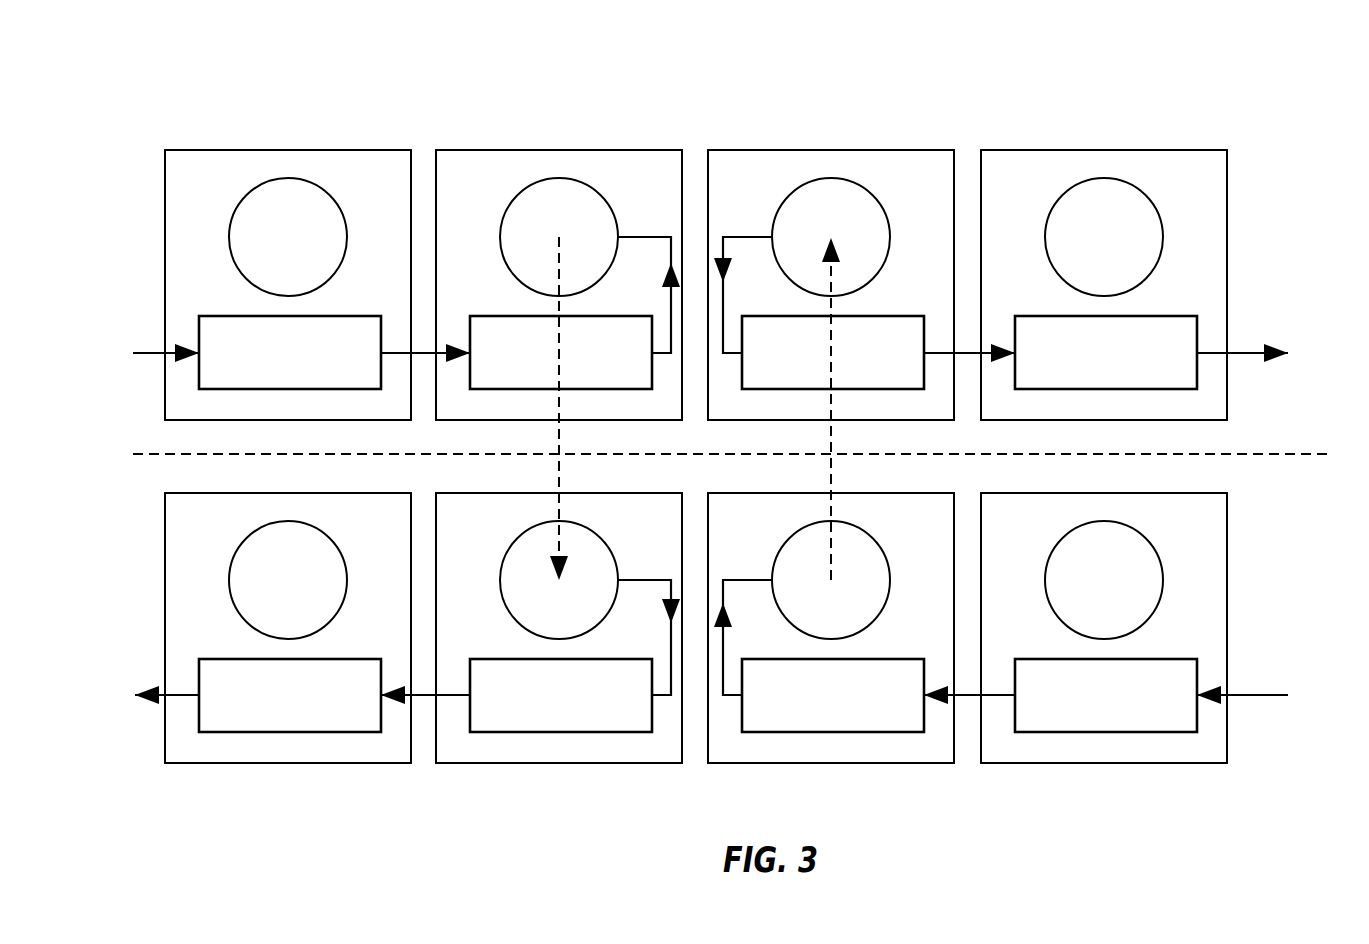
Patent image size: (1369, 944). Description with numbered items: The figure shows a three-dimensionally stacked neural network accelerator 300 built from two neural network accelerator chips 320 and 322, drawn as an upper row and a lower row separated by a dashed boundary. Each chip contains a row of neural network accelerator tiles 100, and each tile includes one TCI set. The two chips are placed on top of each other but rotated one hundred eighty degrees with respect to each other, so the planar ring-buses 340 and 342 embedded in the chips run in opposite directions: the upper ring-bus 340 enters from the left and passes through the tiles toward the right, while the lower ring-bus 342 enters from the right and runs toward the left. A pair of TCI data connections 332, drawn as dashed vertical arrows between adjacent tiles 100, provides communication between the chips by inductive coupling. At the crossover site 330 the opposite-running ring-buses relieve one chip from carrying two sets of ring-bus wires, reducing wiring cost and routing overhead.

The neural network accelerator tile 100 is at (746, 458).
The three-dimensionally stacked neural network accelerator 300 is at (243, 68).
The neural network accelerator chip 320 is at (746, 285).
The neural network accelerator chip 322 is at (747, 628).
The crossover site 330 is at (696, 668).
The TCI data connection 332 is at (832, 468).
The planar ring-bus 340 is at (174, 340).
The planar ring-bus 342 is at (1261, 708).